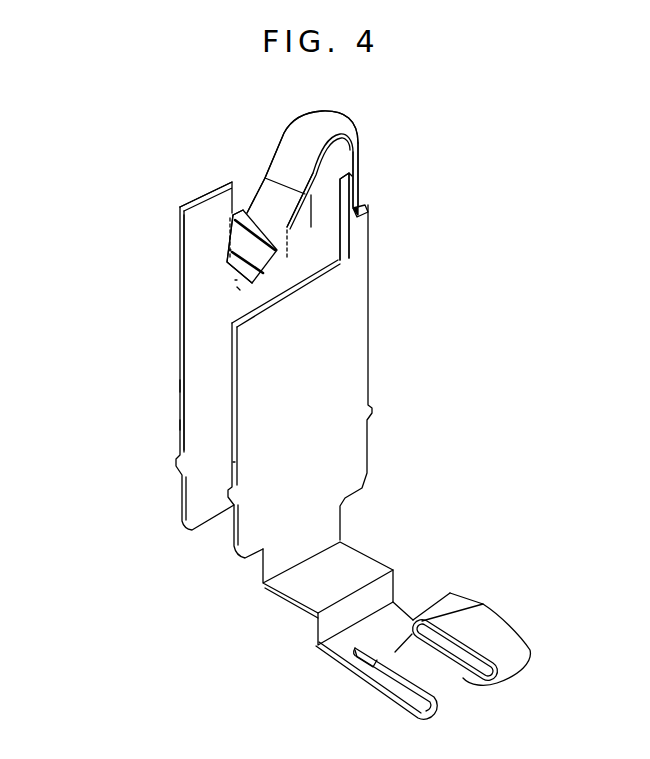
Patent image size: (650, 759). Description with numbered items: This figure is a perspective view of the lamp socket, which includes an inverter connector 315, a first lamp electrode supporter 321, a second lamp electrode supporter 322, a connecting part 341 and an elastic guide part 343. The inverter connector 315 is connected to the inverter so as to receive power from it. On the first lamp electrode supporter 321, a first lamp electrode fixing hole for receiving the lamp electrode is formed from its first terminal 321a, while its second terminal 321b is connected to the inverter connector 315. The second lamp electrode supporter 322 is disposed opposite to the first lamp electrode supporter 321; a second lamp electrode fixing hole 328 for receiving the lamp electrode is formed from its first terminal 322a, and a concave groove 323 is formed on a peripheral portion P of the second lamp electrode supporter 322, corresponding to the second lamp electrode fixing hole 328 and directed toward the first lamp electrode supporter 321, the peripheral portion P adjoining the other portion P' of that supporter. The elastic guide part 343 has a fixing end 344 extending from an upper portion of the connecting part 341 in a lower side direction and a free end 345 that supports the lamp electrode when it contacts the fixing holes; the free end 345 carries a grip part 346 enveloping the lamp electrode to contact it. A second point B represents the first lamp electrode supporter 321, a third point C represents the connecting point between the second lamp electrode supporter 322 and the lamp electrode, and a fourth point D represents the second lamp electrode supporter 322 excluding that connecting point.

The inverter connector 315 is at (523, 640).
The first lamp electrode supporter 321 is at (357, 190).
The first terminal of the first lamp electrode supporter 321a is at (359, 226).
The second terminal of the first lamp electrode supporter 321b is at (334, 528).
The second lamp electrode supporter 322 is at (232, 216).
The first terminal of the second lamp electrode supporter 322a is at (209, 212).
The concave groove 323 is at (186, 244).
The second lamp electrode fixing hole 328 is at (251, 222).
The connecting part 341 is at (357, 153).
The elastic guide part 343 is at (272, 109).
The fixing end 344 is at (290, 142).
The free end 345 is at (248, 207).
The grip part 346 is at (292, 257).
The peripheral portion P is at (328, 318).
The other portion of the second lamp electrode supporter P' is at (166, 388).
The second point B is at (235, 280).
The third point C is at (229, 248).
The fourth point D is at (183, 426).